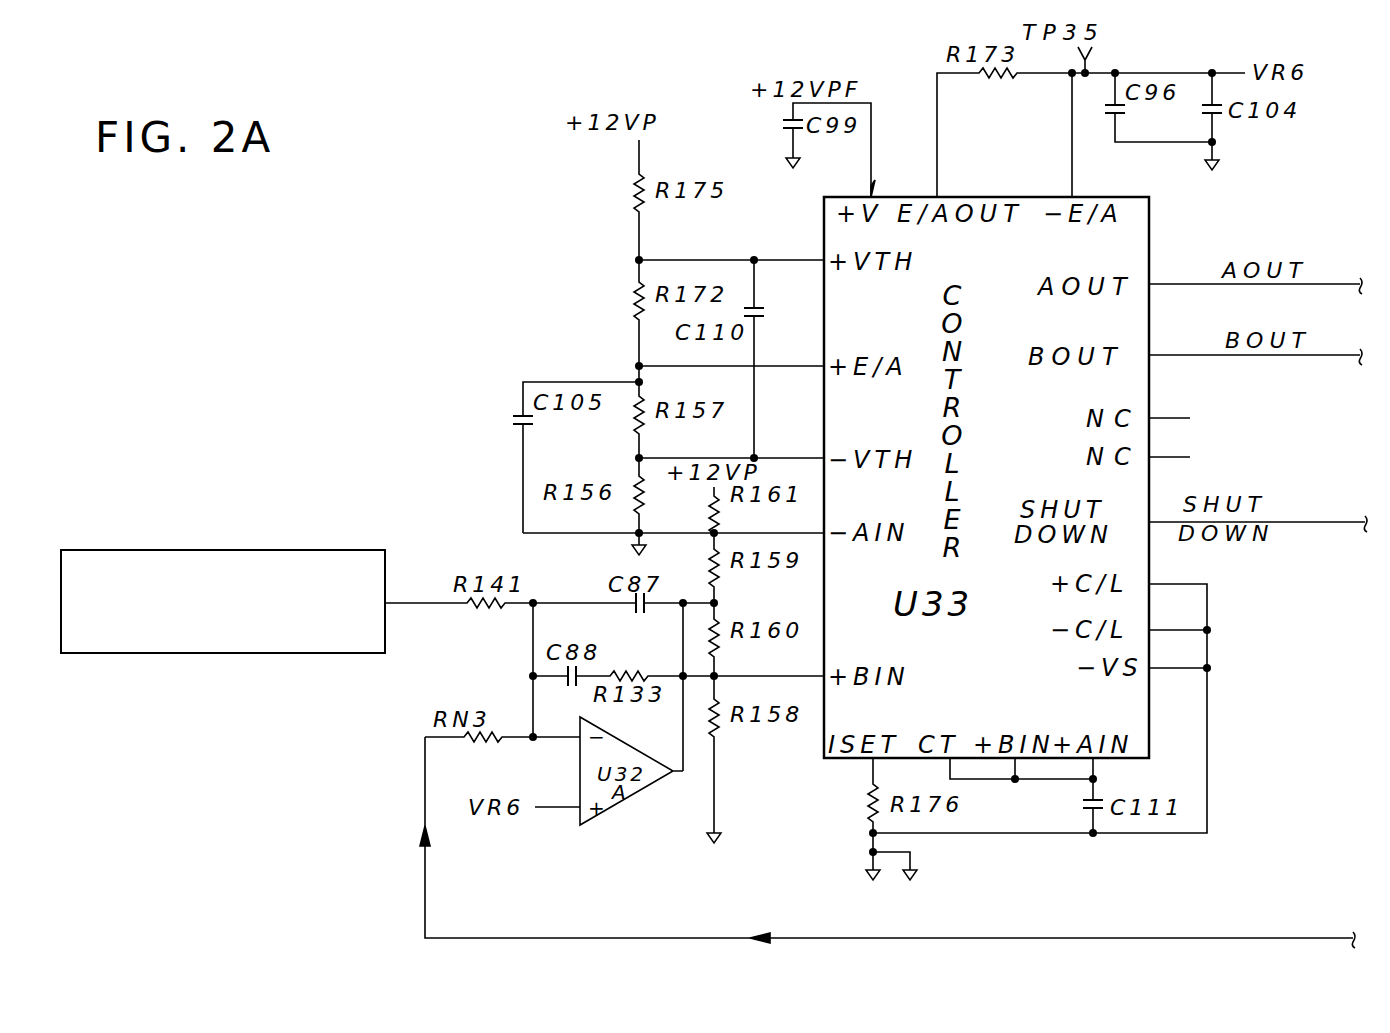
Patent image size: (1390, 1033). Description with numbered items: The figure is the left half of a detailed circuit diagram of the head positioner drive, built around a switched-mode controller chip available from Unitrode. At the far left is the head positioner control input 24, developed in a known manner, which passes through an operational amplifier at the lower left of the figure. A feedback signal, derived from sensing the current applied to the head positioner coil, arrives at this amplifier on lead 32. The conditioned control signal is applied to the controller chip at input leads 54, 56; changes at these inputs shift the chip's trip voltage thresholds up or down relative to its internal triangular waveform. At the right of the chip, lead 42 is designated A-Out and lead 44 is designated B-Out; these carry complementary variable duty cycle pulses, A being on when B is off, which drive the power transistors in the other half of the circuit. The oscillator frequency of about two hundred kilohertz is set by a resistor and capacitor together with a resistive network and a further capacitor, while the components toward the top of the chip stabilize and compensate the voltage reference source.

The head positioner control input 24 is at (283, 550).
The feedback lead 32 is at (1013, 938).
The A-Out lead 42 is at (1198, 284).
The B-Out lead 44 is at (1198, 355).
The input lead 54 is at (746, 533).
The input lead 56 is at (746, 676).